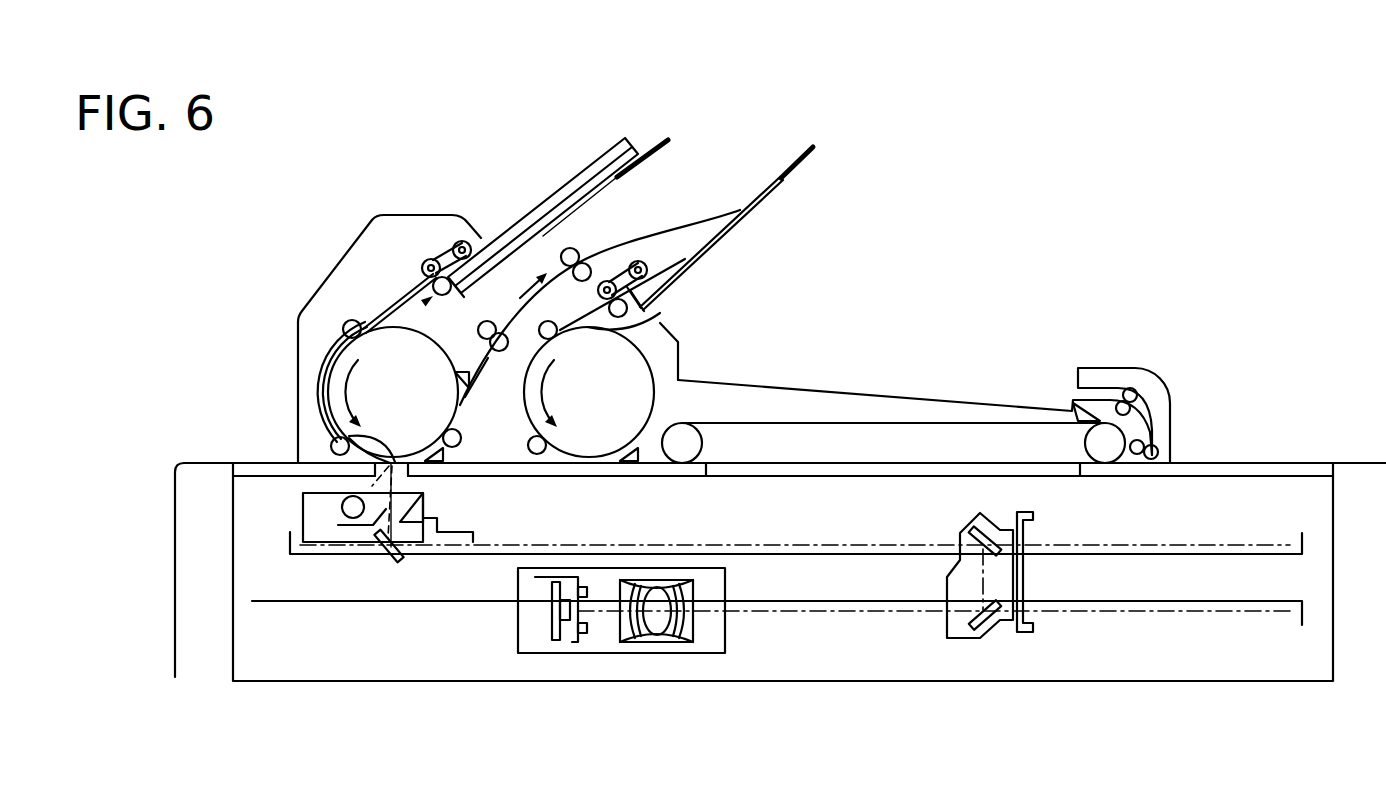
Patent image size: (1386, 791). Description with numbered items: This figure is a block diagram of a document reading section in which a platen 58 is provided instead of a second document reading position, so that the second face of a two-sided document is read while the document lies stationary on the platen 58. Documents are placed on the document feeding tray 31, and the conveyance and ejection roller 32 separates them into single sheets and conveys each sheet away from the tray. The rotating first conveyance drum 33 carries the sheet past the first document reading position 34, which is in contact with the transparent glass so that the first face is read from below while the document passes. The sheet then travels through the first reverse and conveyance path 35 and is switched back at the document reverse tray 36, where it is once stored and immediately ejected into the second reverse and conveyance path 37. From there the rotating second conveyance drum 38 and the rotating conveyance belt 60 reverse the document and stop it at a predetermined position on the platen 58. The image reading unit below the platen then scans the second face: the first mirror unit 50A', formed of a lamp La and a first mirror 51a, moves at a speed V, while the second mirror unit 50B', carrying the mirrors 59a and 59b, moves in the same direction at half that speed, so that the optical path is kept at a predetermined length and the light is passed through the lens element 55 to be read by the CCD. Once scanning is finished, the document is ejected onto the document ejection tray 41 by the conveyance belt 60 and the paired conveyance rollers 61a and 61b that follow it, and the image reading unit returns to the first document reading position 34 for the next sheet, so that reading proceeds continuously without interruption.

The document feeding tray 31 is at (668, 140).
The conveyance and ejection roller 32 is at (440, 258).
The first conveyance drum 33 is at (335, 385).
The first document reading position 34 is at (349, 437).
The first reverse and conveyance path 35 is at (657, 237).
The document reverse tray 36 is at (812, 148).
The second reverse and conveyance path 37 is at (660, 313).
The second conveyance drum 38 is at (648, 360).
The document ejection tray 41 is at (838, 394).
The conveyance belt 60 is at (987, 430).
The conveyance roller 61a is at (1168, 440).
The conveyance roller 61b is at (1133, 388).
The platen 58 is at (847, 470).
The lamp La is at (345, 507).
The first mirror unit 50A' is at (451, 517).
The first mirror 51a is at (378, 545).
The element CCD is at (548, 626).
The imaging lens 55 is at (657, 645).
The second mirror unit 50B' is at (1046, 583).
The mirror 59a is at (971, 530).
The mirror 59b is at (962, 640).